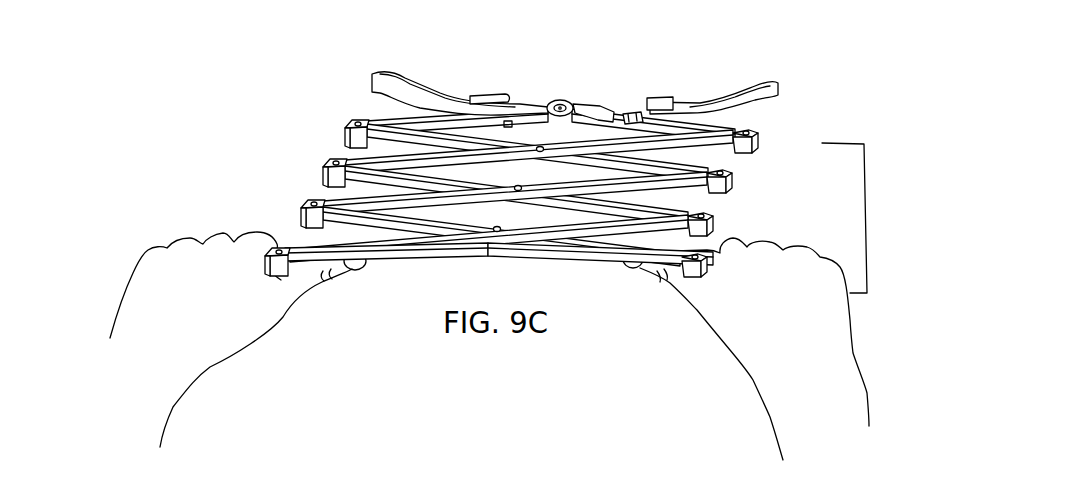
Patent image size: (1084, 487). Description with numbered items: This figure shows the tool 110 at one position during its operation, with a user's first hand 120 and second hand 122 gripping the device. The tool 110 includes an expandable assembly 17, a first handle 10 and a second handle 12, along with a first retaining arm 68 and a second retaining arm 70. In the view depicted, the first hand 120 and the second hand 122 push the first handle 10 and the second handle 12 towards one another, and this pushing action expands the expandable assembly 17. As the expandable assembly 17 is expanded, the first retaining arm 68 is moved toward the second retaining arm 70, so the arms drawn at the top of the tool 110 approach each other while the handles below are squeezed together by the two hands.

The tool 110 is at (316, 61).
The first retaining arm 68 is at (388, 92).
The second retaining arm 70 is at (745, 102).
The expandable assembly 17 is at (863, 222).
The second handle 12 is at (296, 233).
The first handle 10 is at (705, 252).
The first hand 120 is at (238, 339).
The second hand 122 is at (746, 349).